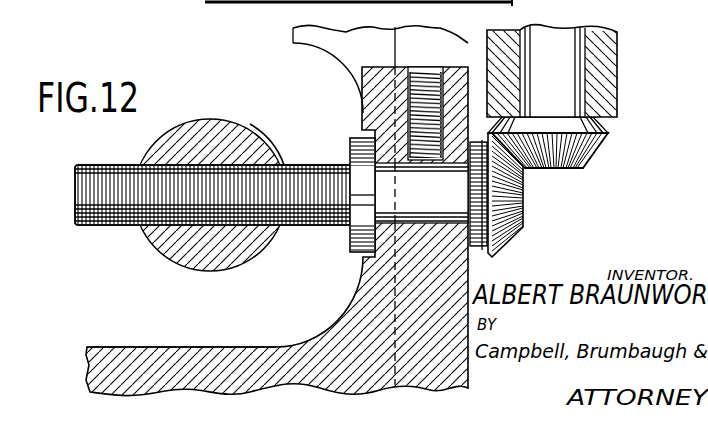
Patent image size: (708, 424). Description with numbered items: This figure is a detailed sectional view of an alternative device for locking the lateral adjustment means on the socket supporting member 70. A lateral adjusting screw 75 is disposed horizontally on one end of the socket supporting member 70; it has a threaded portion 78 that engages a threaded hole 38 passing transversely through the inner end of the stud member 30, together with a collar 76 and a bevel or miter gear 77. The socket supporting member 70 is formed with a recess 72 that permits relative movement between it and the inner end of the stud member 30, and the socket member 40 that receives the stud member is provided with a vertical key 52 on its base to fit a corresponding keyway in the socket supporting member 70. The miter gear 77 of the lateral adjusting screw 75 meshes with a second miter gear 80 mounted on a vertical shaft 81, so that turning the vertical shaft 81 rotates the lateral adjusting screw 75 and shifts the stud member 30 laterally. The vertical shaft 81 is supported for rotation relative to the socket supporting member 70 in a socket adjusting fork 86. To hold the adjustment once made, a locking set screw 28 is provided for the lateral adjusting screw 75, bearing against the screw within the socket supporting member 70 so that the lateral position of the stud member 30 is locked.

The locking set screw 28 is at (413, 67).
The stud member 30 is at (182, 263).
The threaded hole 38 is at (268, 157).
The socket member 40 is at (287, 33).
The vertical key 52 is at (344, 52).
The socket supporting member 70 is at (100, 365).
The recess 72 is at (167, 347).
The lateral adjusting screw 75 is at (114, 230).
The collar 76 is at (352, 246).
The miter gear 77 is at (525, 204).
The threaded portion 78 is at (115, 164).
The miter gear 80 is at (606, 142).
The vertical shaft 81 is at (557, 43).
The socket adjusting fork 86 is at (617, 57).